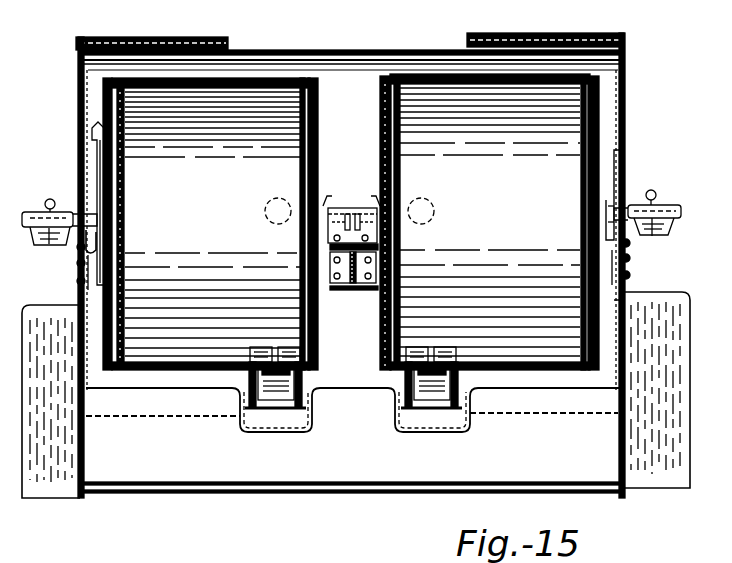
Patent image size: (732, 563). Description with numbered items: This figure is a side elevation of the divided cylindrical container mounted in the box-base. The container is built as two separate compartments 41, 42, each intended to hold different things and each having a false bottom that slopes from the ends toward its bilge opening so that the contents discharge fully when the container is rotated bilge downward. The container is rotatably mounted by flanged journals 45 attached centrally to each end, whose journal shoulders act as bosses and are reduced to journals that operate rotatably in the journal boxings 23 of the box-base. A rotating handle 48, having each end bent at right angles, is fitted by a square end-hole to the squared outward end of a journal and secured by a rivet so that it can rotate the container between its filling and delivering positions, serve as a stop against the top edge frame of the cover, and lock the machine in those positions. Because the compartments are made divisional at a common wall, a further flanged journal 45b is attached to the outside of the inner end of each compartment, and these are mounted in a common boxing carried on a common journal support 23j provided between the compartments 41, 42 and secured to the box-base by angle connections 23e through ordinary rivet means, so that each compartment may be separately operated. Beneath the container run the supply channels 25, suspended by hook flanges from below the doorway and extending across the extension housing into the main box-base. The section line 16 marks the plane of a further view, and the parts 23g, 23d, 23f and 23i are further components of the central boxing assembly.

The section line 16- 16 is at (352, 300).
The compartment 41 is at (210, 224).
The compartment 42 is at (489, 222).
The flanged journal 45 is at (100, 230).
The journal 45b is at (328, 211).
The rotating handle 48 is at (39, 212).
The boxing 23 is at (80, 247).
The chain connecting frame 23g is at (345, 220).
The connecting bolt 23d is at (378, 239).
The connecting plate 23f is at (330, 262).
The angle connection 23e is at (377, 262).
The lower bar 23i is at (344, 291).
The common journal support 23j is at (363, 291).
The supply channel 25 is at (353, 410).